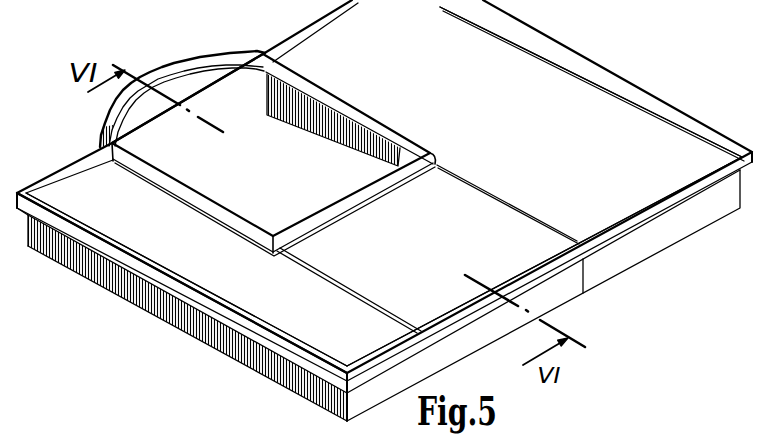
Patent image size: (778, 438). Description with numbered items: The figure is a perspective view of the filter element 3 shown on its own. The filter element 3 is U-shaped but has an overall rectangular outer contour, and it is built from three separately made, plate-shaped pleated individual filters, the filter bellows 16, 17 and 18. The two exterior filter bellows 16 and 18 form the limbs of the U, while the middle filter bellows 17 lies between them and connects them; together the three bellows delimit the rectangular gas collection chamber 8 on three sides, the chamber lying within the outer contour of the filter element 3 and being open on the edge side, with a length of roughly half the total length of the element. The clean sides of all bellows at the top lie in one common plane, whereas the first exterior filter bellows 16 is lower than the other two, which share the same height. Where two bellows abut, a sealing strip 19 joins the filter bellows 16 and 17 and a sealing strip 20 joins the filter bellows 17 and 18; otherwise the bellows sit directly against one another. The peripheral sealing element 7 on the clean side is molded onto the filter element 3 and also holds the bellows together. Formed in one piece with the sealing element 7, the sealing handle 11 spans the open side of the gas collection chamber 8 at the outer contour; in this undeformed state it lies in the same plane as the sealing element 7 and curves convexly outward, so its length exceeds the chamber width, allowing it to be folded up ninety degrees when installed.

The filter element 3 is at (645, 47).
The sealing element 7 is at (257, 241).
The gas collection chamber 8 is at (288, 195).
The sealing handle 11 is at (203, 60).
The filter bellows 16 is at (193, 265).
The filter bellows 17 is at (417, 262).
The filter bellows 18 is at (560, 167).
The sealing strip 19 is at (335, 286).
The sealing strip 20 is at (485, 193).